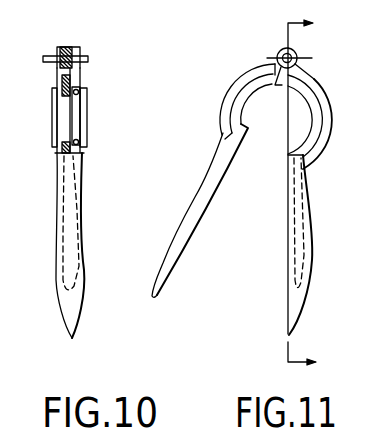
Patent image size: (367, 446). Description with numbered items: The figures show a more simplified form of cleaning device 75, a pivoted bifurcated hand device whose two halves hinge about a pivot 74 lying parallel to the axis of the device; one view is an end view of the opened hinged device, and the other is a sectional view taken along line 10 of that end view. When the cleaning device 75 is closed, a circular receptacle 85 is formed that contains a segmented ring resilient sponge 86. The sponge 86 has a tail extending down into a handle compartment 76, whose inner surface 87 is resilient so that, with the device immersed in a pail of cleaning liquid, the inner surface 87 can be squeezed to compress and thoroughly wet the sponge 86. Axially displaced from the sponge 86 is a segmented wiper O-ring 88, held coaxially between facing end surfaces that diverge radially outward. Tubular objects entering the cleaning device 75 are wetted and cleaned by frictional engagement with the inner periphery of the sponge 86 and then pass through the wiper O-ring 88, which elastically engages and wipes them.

In FIG. 11, the section line 10 is at (316, 194).
In FIG. 10, the pivot 74 is at (88, 59).
In FIG. 11, the pivot 74 is at (297, 58).
In FIG. 10, the cleaning device 75 is at (81, 78).
In FIG. 11, the cleaning device 75 is at (305, 91).
In FIG. 10, the handle compartment 76 is at (75, 264).
In FIG. 11, the handle compartment 76 is at (310, 258).
In FIG. 10, the circular receptacle 85 is at (57, 82).
In FIG. 10, the segmented ring resilient sponge 86 is at (61, 85).
In FIG. 11, the inner surface 87 is at (292, 246).
In FIG. 10, the segmented wiper O-ring 88 is at (77, 101).